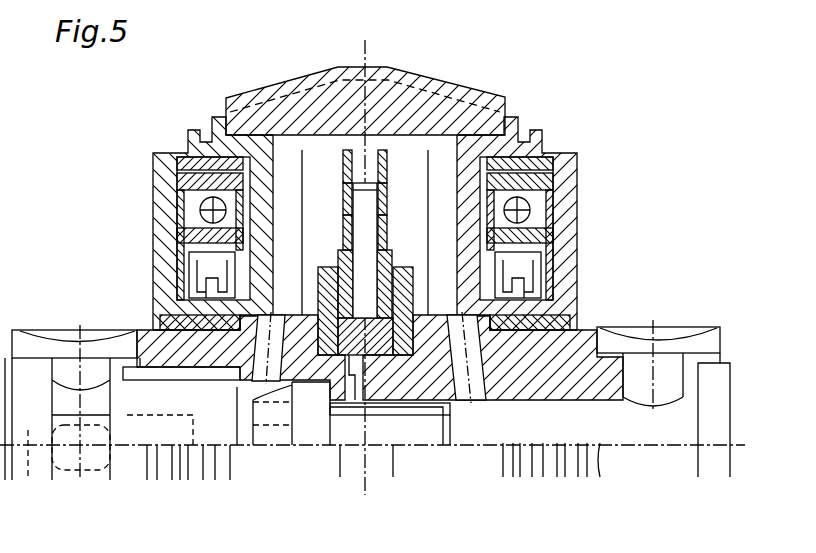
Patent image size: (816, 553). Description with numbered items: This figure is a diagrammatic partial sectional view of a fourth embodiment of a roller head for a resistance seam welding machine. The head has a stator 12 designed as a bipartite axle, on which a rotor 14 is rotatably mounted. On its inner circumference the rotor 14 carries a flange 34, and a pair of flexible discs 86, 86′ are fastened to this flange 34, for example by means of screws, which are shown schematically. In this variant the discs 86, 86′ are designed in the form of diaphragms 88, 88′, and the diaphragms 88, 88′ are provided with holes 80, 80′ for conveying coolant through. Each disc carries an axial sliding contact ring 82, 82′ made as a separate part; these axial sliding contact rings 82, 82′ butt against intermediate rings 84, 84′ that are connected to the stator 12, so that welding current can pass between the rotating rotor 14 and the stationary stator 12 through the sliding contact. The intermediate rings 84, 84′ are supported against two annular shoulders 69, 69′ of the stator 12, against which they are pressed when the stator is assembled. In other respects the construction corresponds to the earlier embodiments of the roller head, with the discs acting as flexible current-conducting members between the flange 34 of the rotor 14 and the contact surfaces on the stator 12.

The stator 12 is at (592, 338).
The rotor 14 is at (358, 172).
The flange 34 is at (381, 168).
The annular shoulder 69 is at (416, 392).
The annular shoulder 69′ is at (302, 385).
The hole 80 is at (388, 172).
The hole 80′ is at (343, 172).
The axial sliding contact ring 82 is at (407, 387).
The axial sliding contact ring 82′ is at (342, 385).
The intermediate ring 84 is at (426, 296).
The intermediate ring 84′ is at (302, 296).
The disc 86 is at (389, 246).
The disc 86′ is at (342, 246).
The diaphragm 88 is at (388, 192).
The diaphragm 88′ is at (343, 192).